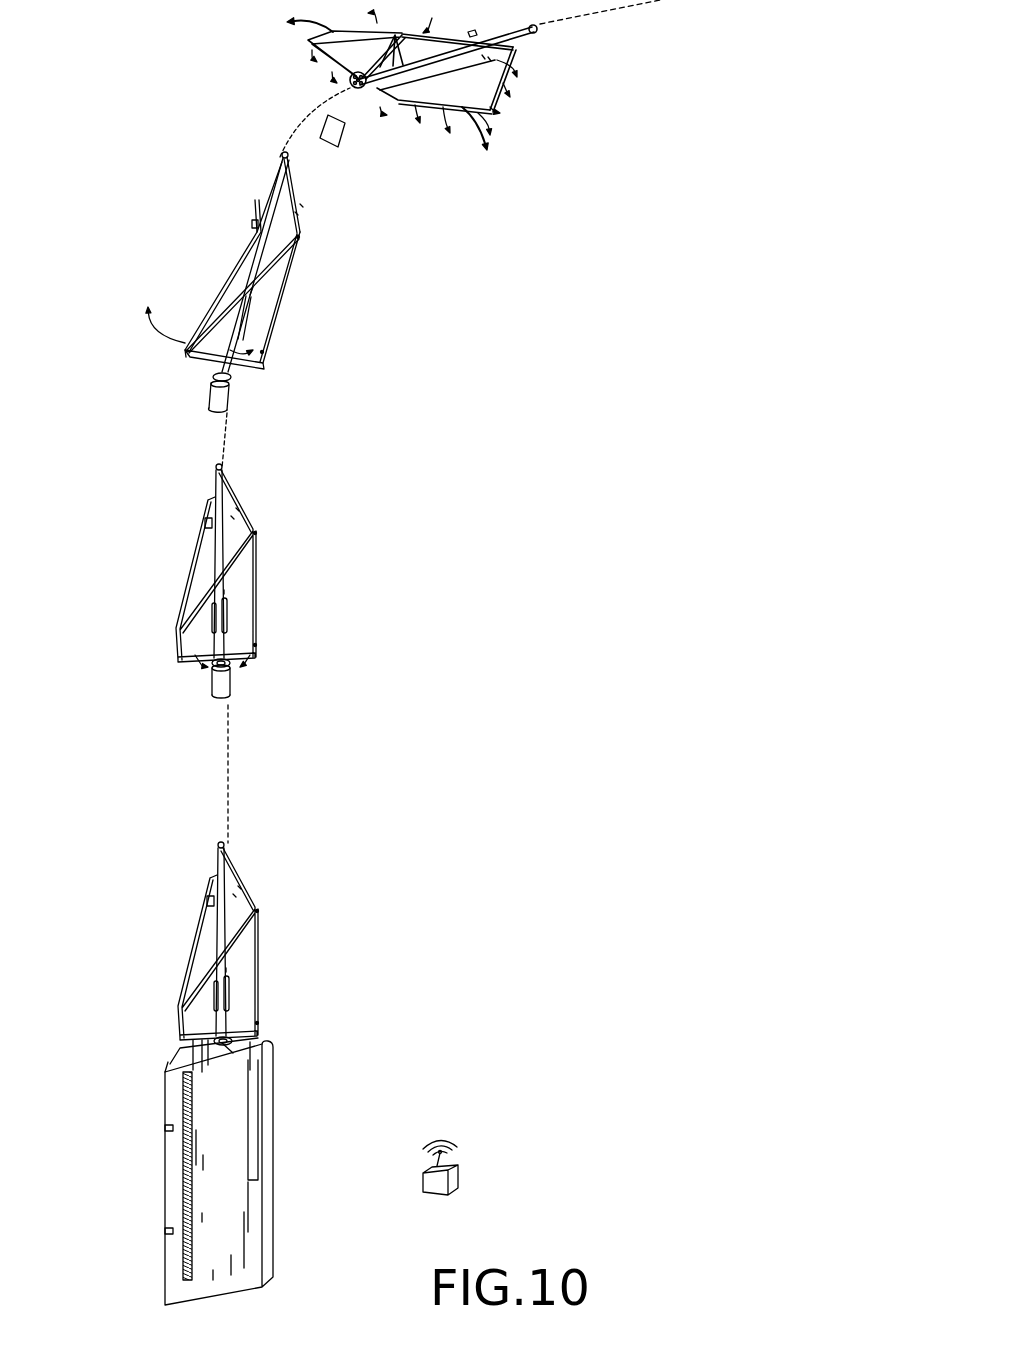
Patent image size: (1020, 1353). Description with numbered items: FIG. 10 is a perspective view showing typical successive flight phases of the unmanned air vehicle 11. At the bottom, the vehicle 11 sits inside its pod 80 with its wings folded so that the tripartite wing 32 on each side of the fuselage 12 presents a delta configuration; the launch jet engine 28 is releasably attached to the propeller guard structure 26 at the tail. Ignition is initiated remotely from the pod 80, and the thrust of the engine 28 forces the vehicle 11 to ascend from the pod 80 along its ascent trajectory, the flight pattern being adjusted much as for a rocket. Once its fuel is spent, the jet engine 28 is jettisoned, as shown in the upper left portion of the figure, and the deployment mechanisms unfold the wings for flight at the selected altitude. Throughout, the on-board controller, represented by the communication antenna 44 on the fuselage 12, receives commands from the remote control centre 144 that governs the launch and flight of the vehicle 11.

The unmanned air vehicle 11 is at (389, 151).
The fuselage 12 is at (224, 493).
The propeller guard structure 26 is at (213, 667).
The launch jet engine 28 is at (338, 148).
The tripartite wing 32 is at (249, 984).
The communication antenna 44 is at (278, 176).
The pod 80 is at (142, 1178).
The remote control centre 144 is at (458, 1186).